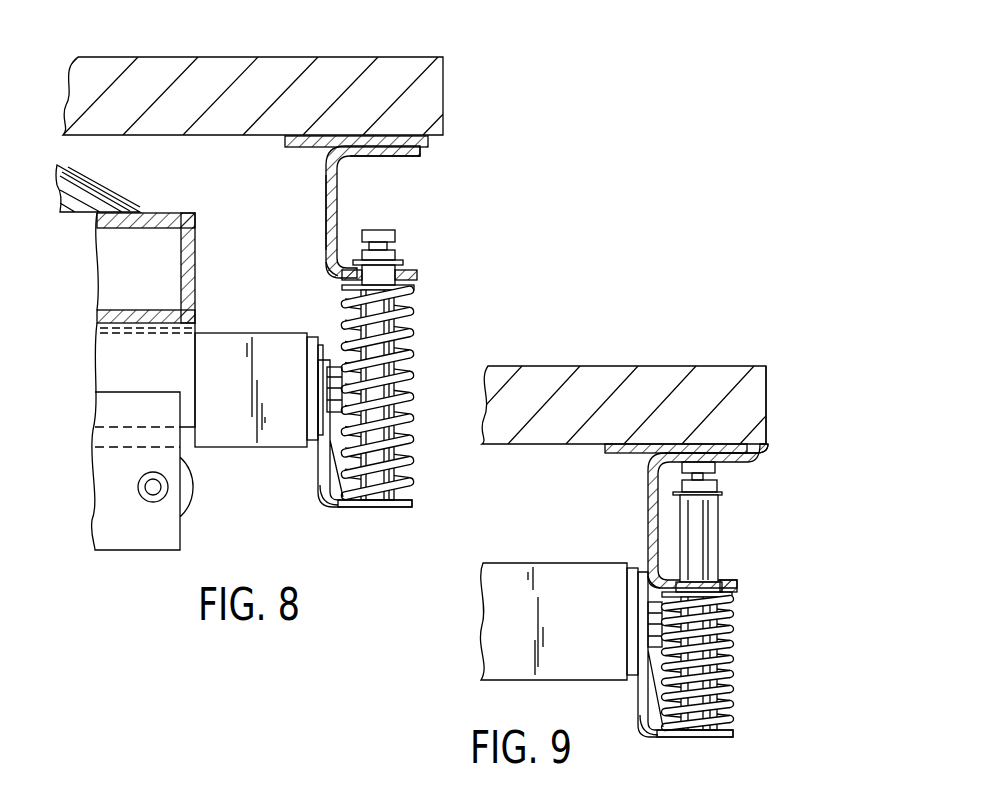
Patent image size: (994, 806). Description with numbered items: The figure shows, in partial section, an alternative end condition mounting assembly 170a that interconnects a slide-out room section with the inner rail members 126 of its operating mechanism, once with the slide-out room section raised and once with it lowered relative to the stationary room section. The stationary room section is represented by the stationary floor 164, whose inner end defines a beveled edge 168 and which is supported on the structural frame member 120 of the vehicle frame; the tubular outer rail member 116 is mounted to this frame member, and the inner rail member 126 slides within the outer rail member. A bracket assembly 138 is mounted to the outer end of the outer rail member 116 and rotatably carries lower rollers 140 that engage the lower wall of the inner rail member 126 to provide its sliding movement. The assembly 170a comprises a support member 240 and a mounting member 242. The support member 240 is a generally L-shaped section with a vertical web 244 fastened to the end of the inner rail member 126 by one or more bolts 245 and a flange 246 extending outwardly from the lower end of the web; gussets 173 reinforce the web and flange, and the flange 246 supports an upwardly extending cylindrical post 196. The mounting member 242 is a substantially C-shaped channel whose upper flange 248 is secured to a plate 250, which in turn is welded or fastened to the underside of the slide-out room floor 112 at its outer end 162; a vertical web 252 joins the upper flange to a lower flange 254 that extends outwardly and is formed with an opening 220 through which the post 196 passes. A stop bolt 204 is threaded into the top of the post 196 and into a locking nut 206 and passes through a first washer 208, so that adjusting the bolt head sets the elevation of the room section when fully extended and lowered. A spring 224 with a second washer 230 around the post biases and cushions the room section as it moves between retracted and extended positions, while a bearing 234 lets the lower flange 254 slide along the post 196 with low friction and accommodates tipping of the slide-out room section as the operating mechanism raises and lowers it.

In FIG. 8, the floor 112 is at (293, 43).
In FIG. 9, the floor 112 is at (623, 358).
In FIG. 8, the outer rail member 116 is at (100, 328).
In FIG. 8, the structural frame member 120 is at (182, 213).
In FIG. 8, the inner rail member 126 is at (227, 342).
In FIG. 9, the inner rail member 126 is at (503, 580).
In FIG. 8, the bracket assembly 138 is at (148, 598).
In FIG. 8, the lower roller 140 is at (183, 497).
In FIG. 9, the outer end 162 is at (733, 372).
In FIG. 8, the stationary floor 164 is at (87, 168).
In FIG. 8, the beveled edge 168 is at (100, 183).
In FIG. 8, the end condition mounting assembly 170a is at (435, 341).
In FIG. 9, the end condition mounting assembly 170a is at (760, 573).
In FIG. 8, the gusset 173 is at (330, 492).
In FIG. 9, the gusset 173 is at (652, 717).
In FIG. 9, the cylindrical post 196 is at (708, 538).
In FIG. 8, the stop bolt 204 is at (395, 233).
In FIG. 9, the stop bolt 204 is at (716, 468).
In FIG. 8, the locking nut 206 is at (395, 253).
In FIG. 9, the locking nut 206 is at (718, 487).
In FIG. 9, the first washer 208 is at (722, 495).
In FIG. 9, the opening 220 is at (703, 572).
In FIG. 8, the spring 224 is at (412, 377).
In FIG. 9, the spring 224 is at (733, 673).
In FIG. 8, the second washer 230 is at (412, 291).
In FIG. 9, the second washer 230 is at (732, 590).
In FIG. 8, the bearing 234 is at (330, 262).
In FIG. 9, the bearing 234 is at (663, 597).
In FIG. 8, the support member 240 is at (368, 527).
In FIG. 9, the support member 240 is at (695, 748).
In FIG. 8, the mounting member 242 is at (342, 202).
In FIG. 8, the vertical web 244 is at (317, 463).
In FIG. 9, the vertical web 244 is at (642, 690).
In FIG. 8, the bolt 245 is at (330, 363).
In FIG. 9, the bolt 245 is at (653, 623).
In FIG. 8, the flange 246 is at (405, 503).
In FIG. 9, the flange 246 is at (727, 737).
In FIG. 8, the upper flange 248 is at (385, 152).
In FIG. 9, the upper flange 248 is at (762, 450).
In FIG. 8, the plate 250 is at (307, 152).
In FIG. 9, the plate 250 is at (642, 450).
In FIG. 8, the vertical web 252 is at (327, 210).
In FIG. 9, the vertical web 252 is at (635, 483).
In FIG. 8, the lower flange 254 is at (417, 276).
In FIG. 9, the lower flange 254 is at (730, 587).